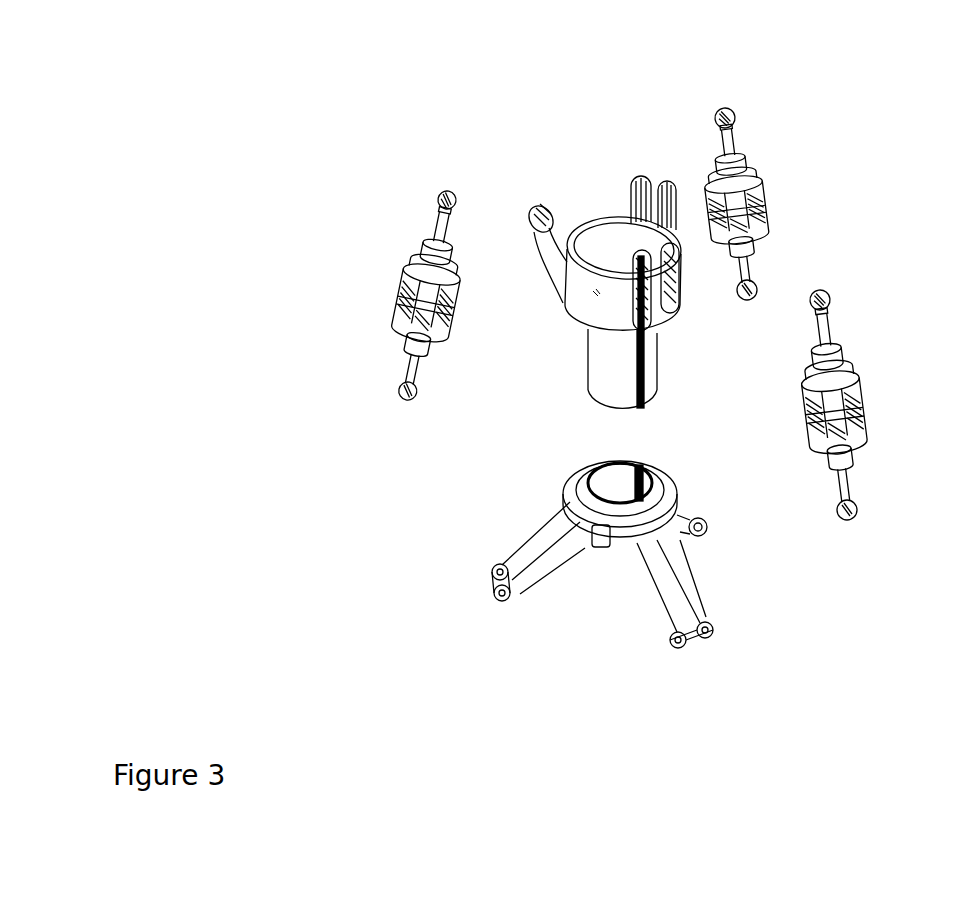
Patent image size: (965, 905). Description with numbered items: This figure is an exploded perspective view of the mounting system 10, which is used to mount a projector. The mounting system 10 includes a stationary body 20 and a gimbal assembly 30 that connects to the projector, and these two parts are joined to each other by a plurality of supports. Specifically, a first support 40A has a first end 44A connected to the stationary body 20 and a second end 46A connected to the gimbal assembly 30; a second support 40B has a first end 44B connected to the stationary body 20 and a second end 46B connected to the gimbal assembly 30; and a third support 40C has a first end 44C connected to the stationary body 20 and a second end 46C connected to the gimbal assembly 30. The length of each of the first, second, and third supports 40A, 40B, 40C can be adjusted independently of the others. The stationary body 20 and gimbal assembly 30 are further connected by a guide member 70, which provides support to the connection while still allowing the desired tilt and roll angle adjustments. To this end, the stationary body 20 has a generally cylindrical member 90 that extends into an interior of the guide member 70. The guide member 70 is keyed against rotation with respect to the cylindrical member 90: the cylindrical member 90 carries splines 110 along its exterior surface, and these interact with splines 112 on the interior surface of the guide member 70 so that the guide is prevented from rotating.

The mounting system 10 is at (383, 76).
The stationary body 20 is at (600, 218).
The gimbal assembly 30 is at (533, 520).
The first support 40A is at (406, 279).
The second support 40B is at (849, 376).
The third support 40C is at (768, 190).
The first end of first support 44A is at (439, 193).
The first end of second support 44B is at (829, 298).
The first end of third support 44C is at (718, 106).
The second end of first support 46A is at (397, 396).
The second end of second support 46B is at (855, 504).
The second end of third support 46C is at (756, 281).
The guide member 70 is at (583, 489).
The generally cylindrical member 90 is at (659, 362).
The splines 110 is at (652, 410).
The splines 112 is at (649, 468).